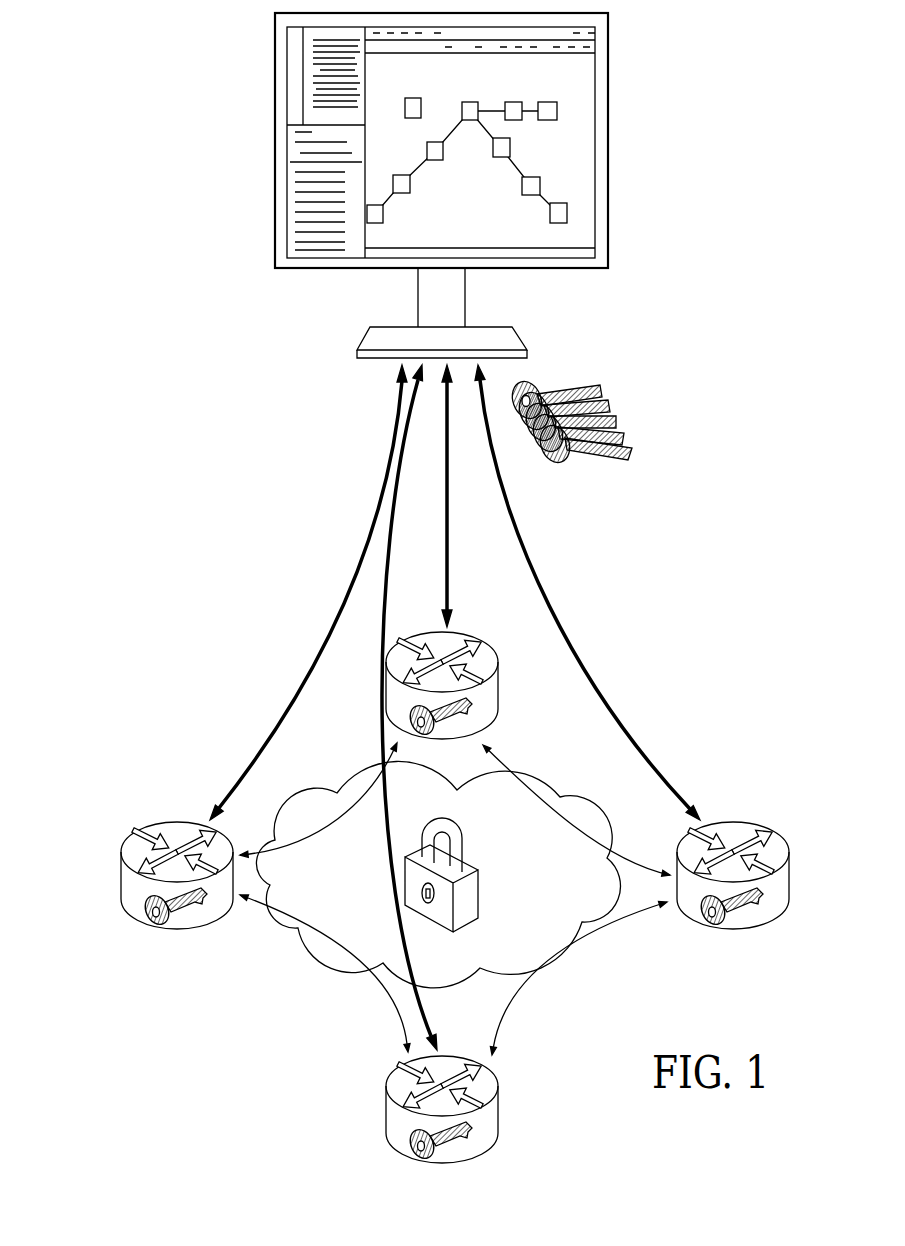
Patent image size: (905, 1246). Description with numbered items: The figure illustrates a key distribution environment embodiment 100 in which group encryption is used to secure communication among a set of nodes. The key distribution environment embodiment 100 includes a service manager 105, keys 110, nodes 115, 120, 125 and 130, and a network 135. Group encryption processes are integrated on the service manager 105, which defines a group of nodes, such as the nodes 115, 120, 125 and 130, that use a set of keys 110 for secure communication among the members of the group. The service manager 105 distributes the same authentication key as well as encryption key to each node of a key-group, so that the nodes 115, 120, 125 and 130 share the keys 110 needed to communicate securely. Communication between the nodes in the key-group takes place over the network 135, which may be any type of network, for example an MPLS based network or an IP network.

The key distribution environment embodiment 100 is at (143, 121).
The service manager 105 is at (275, 172).
The keys 110 is at (632, 417).
The node 115 is at (413, 633).
The node 120 is at (147, 825).
The node 125 is at (737, 820).
The node 130 is at (390, 1068).
The network 135 is at (297, 800).